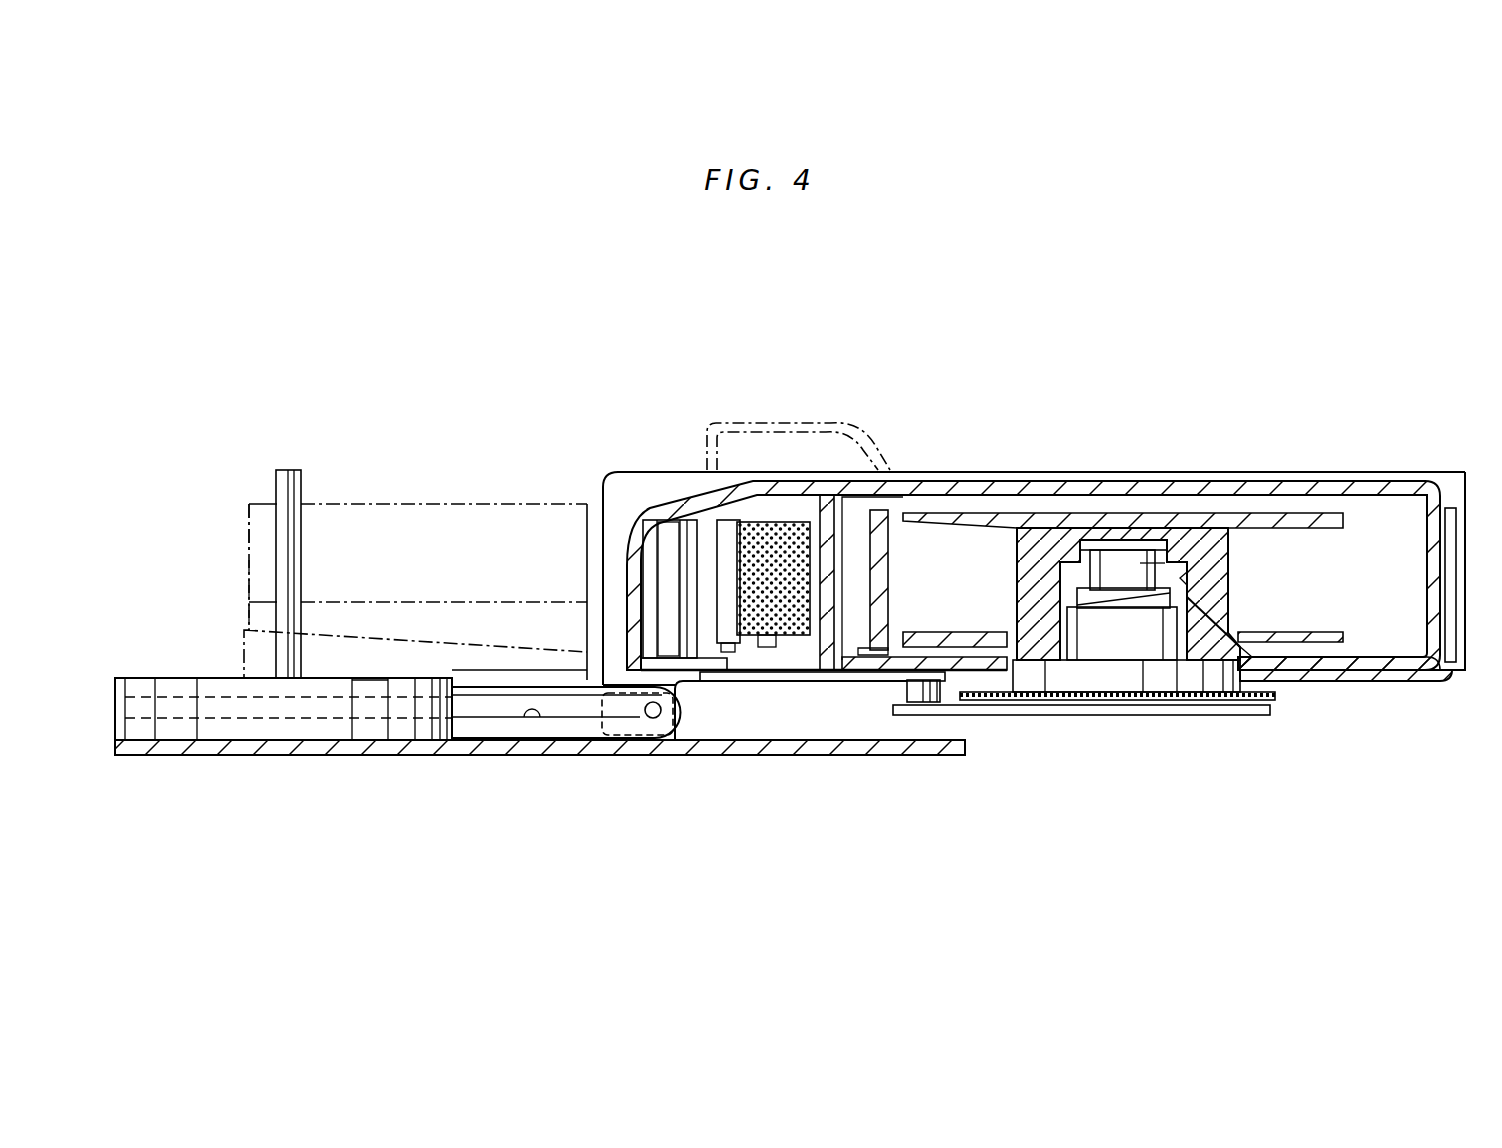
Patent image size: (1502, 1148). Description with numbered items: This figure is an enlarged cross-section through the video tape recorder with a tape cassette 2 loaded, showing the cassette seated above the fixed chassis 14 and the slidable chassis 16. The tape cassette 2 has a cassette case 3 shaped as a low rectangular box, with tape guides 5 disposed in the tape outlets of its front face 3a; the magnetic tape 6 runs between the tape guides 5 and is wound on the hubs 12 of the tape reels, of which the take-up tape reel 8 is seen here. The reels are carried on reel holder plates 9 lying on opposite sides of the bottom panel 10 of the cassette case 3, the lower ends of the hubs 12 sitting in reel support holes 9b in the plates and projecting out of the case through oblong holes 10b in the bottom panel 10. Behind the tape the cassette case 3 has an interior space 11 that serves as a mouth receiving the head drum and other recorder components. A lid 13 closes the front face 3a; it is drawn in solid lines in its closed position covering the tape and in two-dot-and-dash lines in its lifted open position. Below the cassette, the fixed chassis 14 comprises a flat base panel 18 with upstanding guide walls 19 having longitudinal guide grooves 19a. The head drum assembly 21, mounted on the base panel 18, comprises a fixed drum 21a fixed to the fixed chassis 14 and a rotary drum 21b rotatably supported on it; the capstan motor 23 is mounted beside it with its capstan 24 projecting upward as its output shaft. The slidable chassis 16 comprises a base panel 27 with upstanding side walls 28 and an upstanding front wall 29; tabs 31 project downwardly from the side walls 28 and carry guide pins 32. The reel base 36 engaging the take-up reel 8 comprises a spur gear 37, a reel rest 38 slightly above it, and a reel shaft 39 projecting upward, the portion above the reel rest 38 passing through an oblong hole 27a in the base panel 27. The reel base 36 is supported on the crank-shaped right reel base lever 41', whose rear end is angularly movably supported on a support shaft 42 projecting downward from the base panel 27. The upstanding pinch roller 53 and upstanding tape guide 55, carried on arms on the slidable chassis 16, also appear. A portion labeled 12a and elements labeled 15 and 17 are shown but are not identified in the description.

The tape cassette 2 is at (1302, 475).
The cassette case 3 is at (1187, 488).
The front face 3a is at (650, 648).
The tape guides 5 is at (668, 558).
The magnetic tape 6 is at (655, 593).
The tape reel 8 is at (1028, 515).
The reel holder plates 9 is at (897, 652).
The reel support holes 9b is at (1017, 652).
The bottom panel 10 is at (1357, 660).
The oblong holes 10b is at (1012, 645).
The interior space 11 is at (822, 640).
The hubs 12 is at (1213, 596).
The bearing portion 12a is at (1195, 578).
The lid 13 is at (603, 490).
The fixed chassis 14 is at (428, 756).
The mounting stand 15 is at (216, 777).
The slidable chassis 16 is at (1418, 690).
The direction arrow 17 is at (1271, 722).
The base panel 18 is at (355, 752).
The guide walls 19 is at (475, 690).
The guide grooves 19a is at (526, 735).
The head drum assembly 21 is at (186, 495).
The fixed drum 21a is at (247, 612).
The rotary drum 21b is at (249, 527).
The capstan motor 23 is at (168, 685).
The capstan 24 is at (302, 478).
The base panel 27 is at (1368, 690).
The oblong holes 27a is at (1010, 702).
The side walls 28 is at (643, 480).
The front wall 29 is at (1451, 508).
The tabs 31 is at (665, 755).
The guide pins 32 is at (643, 736).
The reel base 36 is at (1110, 540).
The spur gears 37 is at (1130, 700).
The reel rests 38 is at (1070, 680).
The reel shafts 39 is at (1162, 563).
The right reel base lever 41' is at (1081, 766).
The support shafts 42 is at (905, 688).
The pinch roller 53 is at (773, 537).
The tape guide 55 is at (727, 523).